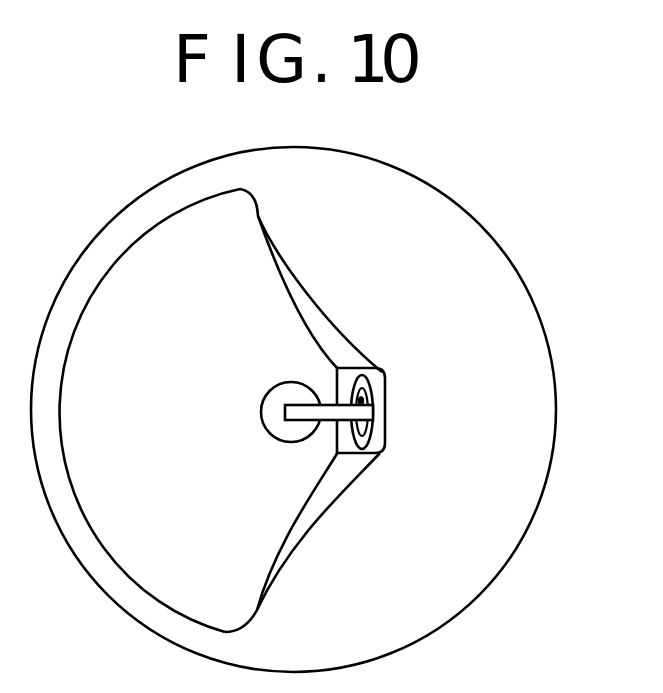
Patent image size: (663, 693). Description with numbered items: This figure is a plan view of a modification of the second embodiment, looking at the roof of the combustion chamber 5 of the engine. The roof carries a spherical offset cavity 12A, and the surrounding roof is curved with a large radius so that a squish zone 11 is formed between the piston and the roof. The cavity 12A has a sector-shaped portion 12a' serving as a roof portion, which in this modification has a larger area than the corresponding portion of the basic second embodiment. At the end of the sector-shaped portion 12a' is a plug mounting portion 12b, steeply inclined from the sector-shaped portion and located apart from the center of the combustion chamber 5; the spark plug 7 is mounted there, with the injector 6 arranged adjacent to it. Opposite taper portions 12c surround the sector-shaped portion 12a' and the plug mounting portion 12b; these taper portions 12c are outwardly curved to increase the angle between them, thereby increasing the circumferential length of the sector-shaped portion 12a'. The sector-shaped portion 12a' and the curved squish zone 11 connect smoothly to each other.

The combustion chamber 5 is at (503, 277).
The injector 6 is at (300, 380).
The spark plug 7 is at (328, 404).
The squish zone 11 is at (433, 507).
The cavity 12A is at (207, 477).
The sector-shaped portion 12a' is at (142, 420).
The plug mounting portion 12b is at (385, 436).
The taper portions 12c is at (303, 518).